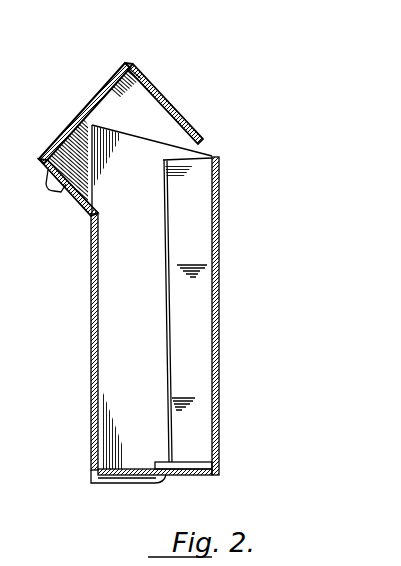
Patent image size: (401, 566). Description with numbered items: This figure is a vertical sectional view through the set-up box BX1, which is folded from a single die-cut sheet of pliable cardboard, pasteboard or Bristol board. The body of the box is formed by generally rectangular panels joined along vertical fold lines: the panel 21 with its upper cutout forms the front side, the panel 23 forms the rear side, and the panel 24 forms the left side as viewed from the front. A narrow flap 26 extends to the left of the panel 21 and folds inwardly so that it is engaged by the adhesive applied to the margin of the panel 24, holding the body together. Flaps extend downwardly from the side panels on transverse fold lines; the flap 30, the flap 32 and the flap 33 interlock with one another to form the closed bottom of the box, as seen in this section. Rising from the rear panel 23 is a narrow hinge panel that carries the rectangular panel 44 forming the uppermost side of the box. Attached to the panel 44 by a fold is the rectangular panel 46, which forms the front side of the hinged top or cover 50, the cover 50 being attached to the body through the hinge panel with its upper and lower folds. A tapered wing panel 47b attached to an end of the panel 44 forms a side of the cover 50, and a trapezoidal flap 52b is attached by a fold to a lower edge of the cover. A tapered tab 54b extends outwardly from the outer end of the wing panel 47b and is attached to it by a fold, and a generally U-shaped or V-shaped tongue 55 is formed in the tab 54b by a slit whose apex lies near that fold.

The box BX1 is at (224, 149).
The panel 21 is at (221, 348).
The panel 23 is at (93, 409).
The panel 24 is at (113, 351).
The flap 26 is at (197, 247).
The flap 30 is at (204, 477).
The flap 32 is at (117, 483).
The flap 33 is at (157, 477).
The panel 44 is at (90, 106).
The panel 46 is at (177, 110).
The wing panel 47b is at (78, 137).
The cover 50 is at (127, 62).
The trapezoidal flap 52b is at (110, 83).
The tapered tab 54b is at (77, 184).
The tongue 55 is at (44, 152).